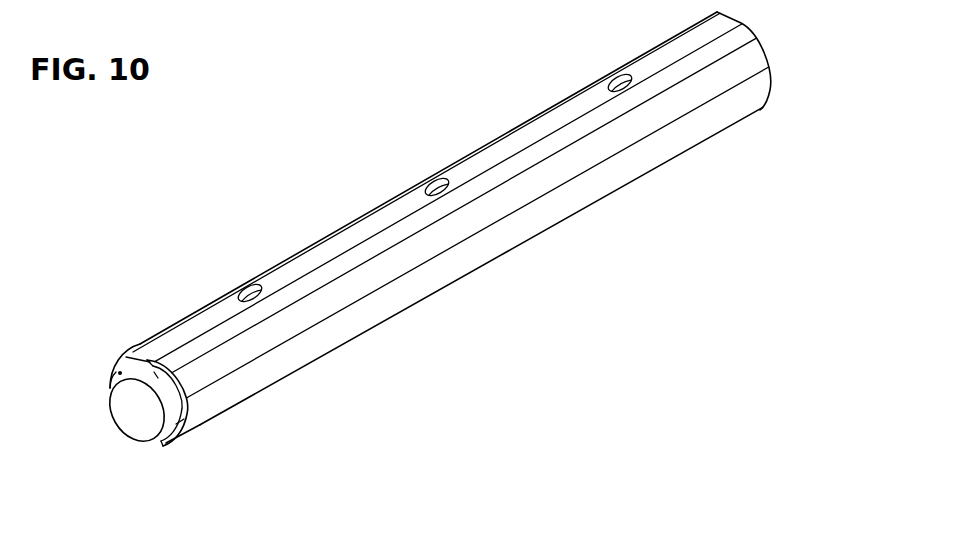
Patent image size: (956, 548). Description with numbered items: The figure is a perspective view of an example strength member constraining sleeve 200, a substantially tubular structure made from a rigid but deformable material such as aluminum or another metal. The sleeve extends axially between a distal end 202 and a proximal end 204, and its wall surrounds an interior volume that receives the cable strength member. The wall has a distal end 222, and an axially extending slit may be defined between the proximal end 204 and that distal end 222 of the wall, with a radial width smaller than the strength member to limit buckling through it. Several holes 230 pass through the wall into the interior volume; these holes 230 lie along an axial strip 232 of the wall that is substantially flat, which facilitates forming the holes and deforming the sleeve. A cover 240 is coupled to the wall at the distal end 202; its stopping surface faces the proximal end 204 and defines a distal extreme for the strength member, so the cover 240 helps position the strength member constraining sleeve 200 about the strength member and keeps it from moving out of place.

The strength member constraining sleeve 200 is at (316, 122).
The distal end 202 is at (126, 432).
The proximal end 204 is at (765, 56).
The distal end of the wall 222 is at (178, 437).
The holes 230 is at (252, 290).
The axial strip 232 is at (519, 145).
The cover 240 is at (122, 405).